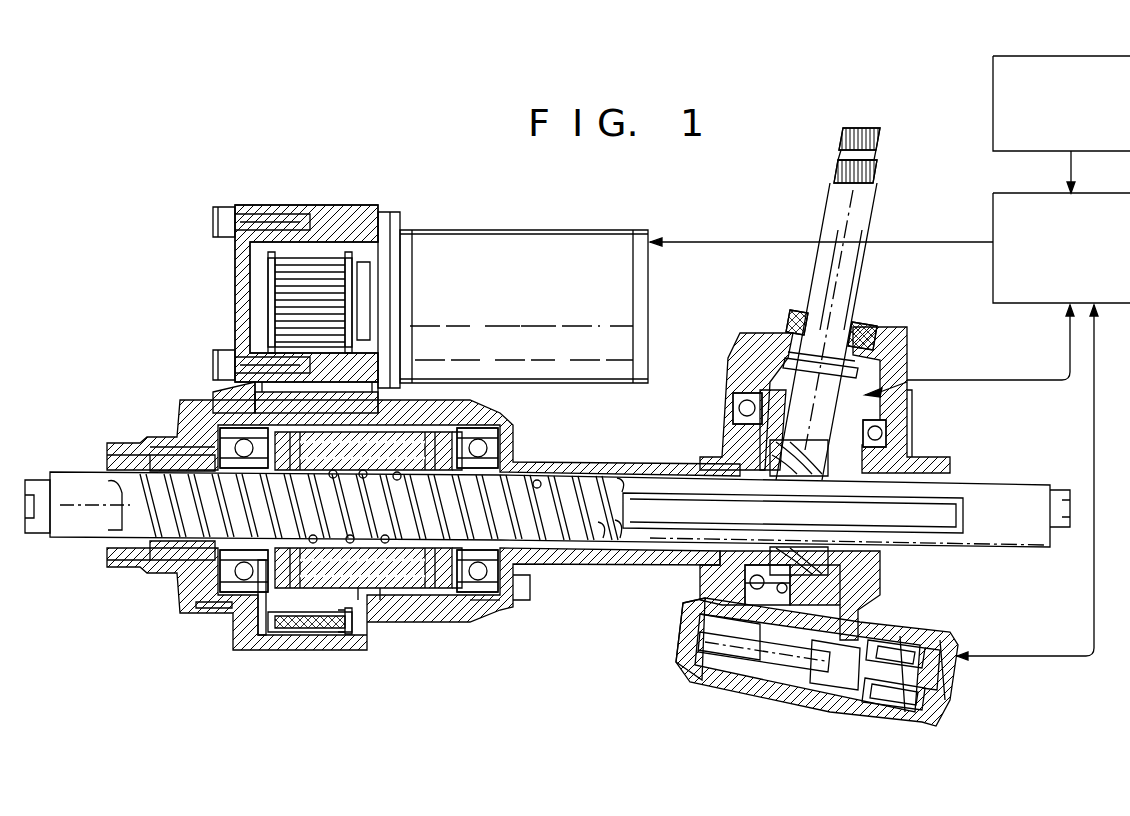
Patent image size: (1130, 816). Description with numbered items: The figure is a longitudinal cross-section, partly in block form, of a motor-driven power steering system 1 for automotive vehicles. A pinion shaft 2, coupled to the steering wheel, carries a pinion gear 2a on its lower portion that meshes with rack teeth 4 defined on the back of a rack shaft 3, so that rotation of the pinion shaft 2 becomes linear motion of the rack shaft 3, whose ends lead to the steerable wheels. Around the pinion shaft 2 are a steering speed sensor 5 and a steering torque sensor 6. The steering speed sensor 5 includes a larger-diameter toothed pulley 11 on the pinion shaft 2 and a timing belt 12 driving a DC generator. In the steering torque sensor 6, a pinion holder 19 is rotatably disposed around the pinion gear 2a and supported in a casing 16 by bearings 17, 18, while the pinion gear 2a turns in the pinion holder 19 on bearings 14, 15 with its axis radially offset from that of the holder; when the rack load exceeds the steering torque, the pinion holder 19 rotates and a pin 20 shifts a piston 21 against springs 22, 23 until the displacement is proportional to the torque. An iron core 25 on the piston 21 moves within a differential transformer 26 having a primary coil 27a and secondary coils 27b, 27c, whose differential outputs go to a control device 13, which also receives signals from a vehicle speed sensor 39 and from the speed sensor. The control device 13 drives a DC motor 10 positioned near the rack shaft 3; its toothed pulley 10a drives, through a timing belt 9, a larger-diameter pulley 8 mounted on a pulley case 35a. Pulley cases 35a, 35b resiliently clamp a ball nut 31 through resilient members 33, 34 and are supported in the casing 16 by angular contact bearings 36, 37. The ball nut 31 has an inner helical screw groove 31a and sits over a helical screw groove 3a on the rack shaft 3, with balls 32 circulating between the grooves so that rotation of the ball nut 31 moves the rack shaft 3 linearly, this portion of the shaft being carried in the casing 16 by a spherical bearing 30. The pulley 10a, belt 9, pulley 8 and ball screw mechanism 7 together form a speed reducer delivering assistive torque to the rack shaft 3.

The motor-driven power steering system 1 is at (698, 210).
The pinion shaft 2 is at (850, 279).
The pinion gear 2a is at (835, 490).
The rack shaft 3 is at (1015, 495).
The helical screw groove 3a is at (548, 486).
The rack teeth 4 is at (900, 456).
The steering speed sensor 5 is at (912, 403).
The steering torque sensor 6 is at (948, 712).
The ball screw mechanism 7 is at (402, 580).
The larger-diameter pulley 8 is at (349, 632).
The timing belt 9 is at (292, 632).
The DC motor 10 is at (500, 243).
The toothed pulley 10a is at (266, 283).
The larger-diameter toothed pulley 11 is at (872, 366).
The timing belt 12 is at (905, 377).
The control device 13 is at (1040, 303).
The bearing 14 is at (742, 420).
The bearing 15 is at (757, 600).
The casing 16 is at (600, 470).
The bearing 17 is at (740, 396).
The bearing 18 is at (712, 576).
The pinion holder 19 is at (762, 452).
The pin 20 is at (776, 656).
The piston 21 is at (746, 672).
The spring 22 is at (816, 668).
The spring 23 is at (688, 662).
The iron core 25 is at (942, 680).
The differential transformer 26 is at (905, 714).
The primary coil 27a is at (955, 642).
The secondary coil 27b is at (918, 642).
The secondary coil 27c is at (884, 636).
The spherical bearing 30 is at (140, 470).
The ball nut 31 is at (395, 598).
The helical screw groove 31a is at (358, 540).
The balls 32 is at (310, 540).
The resilient member 33 is at (465, 606).
The resilient member 34 is at (262, 630).
The pulley case 35a is at (370, 600).
The pulley case 35b is at (455, 605).
The angular contact bearing 36 is at (488, 575).
The angular contact bearing 37 is at (212, 610).
The vehicle speed sensor 39 is at (993, 82).
The vehicle speed signal Va is at (722, 243).